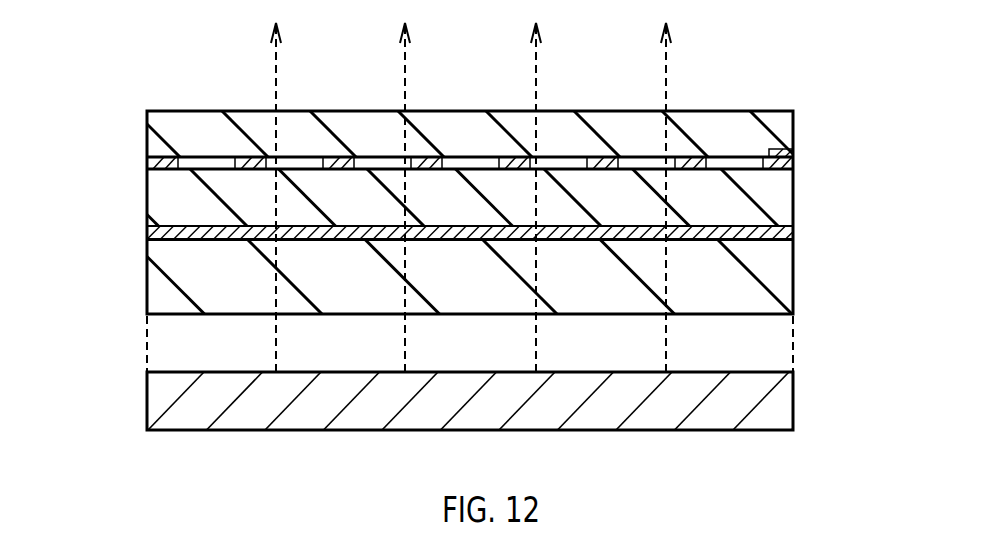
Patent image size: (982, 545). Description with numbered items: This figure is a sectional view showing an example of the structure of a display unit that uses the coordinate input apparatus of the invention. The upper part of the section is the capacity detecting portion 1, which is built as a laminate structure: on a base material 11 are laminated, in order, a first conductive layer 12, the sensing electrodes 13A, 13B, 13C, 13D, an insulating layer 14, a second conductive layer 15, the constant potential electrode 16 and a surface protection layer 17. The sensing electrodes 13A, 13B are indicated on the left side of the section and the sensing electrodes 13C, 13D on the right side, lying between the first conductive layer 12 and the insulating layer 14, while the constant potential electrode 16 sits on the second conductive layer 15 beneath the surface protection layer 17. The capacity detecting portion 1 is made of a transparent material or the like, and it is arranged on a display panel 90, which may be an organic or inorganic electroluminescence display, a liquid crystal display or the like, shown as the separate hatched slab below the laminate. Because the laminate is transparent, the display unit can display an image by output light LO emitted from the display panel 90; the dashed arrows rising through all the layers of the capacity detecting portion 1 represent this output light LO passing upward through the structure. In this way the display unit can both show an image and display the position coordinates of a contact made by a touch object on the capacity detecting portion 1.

The capacity detecting portion 1 is at (917, 100).
The base material 11 is at (778, 272).
The first conductive layer 12 is at (780, 247).
The sensing electrode 13A is at (411, 219).
The sensing electrode 13B is at (170, 213).
The sensing electrode 13C is at (690, 220).
The sensing electrode 13D is at (762, 216).
The insulating layer 14 is at (778, 190).
The second conductive layer 15 is at (792, 167).
The constant potential electrode 16 is at (783, 143).
The surface protection layer 17 is at (772, 124).
The display panel 90 is at (775, 405).
The output light LO is at (275, 63).